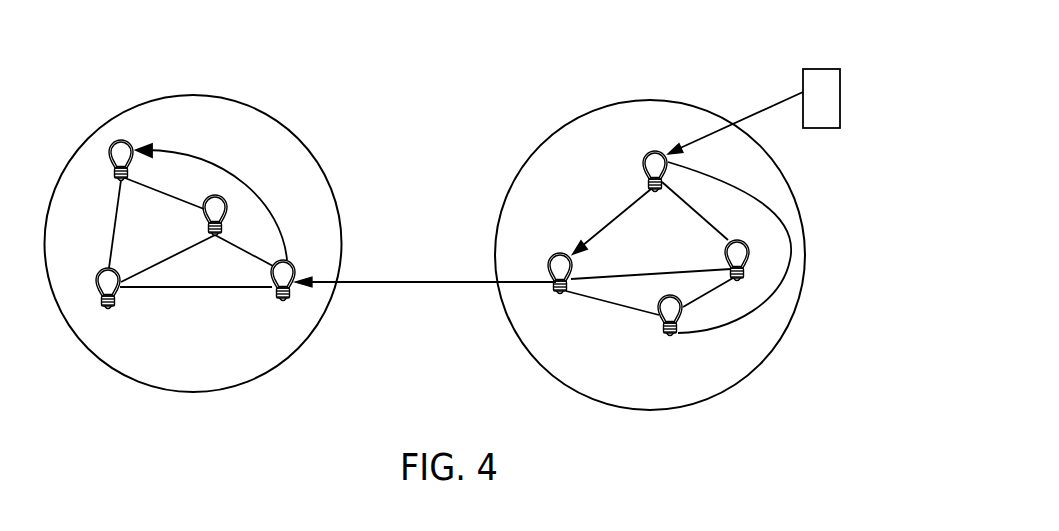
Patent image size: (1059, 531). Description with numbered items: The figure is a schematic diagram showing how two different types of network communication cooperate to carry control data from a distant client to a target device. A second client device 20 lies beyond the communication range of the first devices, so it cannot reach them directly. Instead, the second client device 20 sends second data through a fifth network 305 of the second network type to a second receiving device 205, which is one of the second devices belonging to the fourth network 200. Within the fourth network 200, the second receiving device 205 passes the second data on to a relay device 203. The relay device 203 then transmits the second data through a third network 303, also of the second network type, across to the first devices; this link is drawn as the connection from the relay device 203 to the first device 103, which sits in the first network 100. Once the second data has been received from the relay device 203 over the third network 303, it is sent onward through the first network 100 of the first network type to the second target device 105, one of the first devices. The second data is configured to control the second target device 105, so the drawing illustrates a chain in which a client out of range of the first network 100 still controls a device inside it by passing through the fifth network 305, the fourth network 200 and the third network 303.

The second client device 20 is at (830, 68).
The first network 100 is at (222, 96).
The first device 103 is at (284, 303).
The second target device 105 is at (121, 138).
The fourth network 200 is at (693, 107).
The relay device 203 is at (558, 296).
The second receiving device 205 is at (645, 150).
The third network 303 is at (432, 284).
The fifth network 305 is at (765, 113).